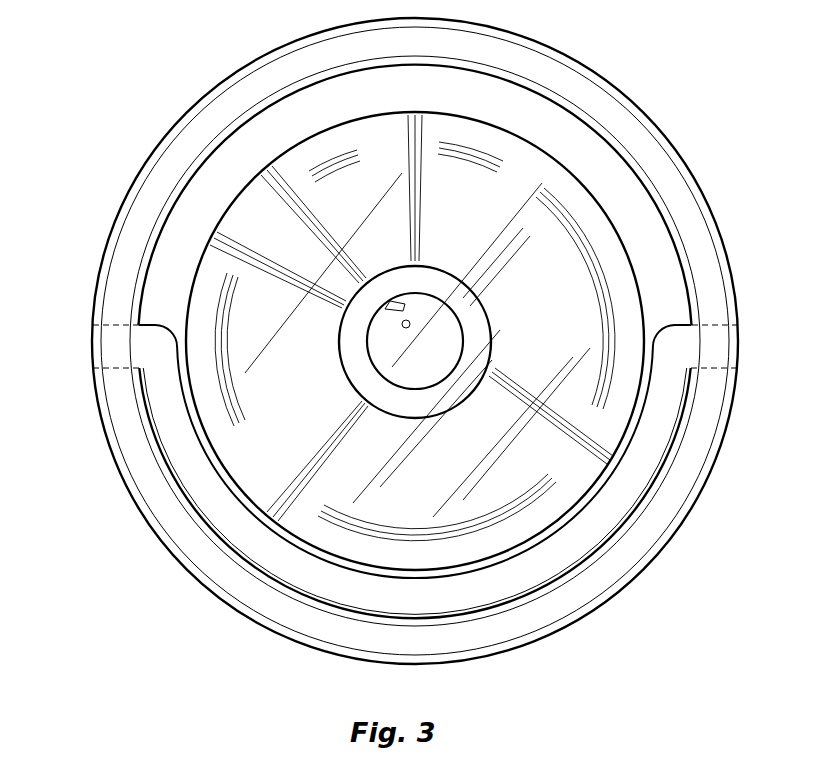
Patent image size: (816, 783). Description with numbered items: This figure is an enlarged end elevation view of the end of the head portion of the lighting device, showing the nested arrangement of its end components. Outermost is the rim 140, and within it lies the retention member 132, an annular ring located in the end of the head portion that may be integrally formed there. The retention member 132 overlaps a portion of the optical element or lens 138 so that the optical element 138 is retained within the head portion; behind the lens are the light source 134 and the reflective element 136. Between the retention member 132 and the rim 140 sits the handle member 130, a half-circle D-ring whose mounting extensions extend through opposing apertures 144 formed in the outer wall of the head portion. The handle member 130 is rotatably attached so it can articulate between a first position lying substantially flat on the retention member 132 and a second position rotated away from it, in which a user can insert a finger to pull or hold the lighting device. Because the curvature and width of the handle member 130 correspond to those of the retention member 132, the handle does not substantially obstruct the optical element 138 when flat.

The handle member 130 is at (620, 495).
The retention member 132 is at (255, 145).
The light source 134 is at (447, 323).
The reflective element 136 is at (266, 463).
The optical element 138 is at (217, 220).
The rim 140 is at (557, 72).
The apertures 144 is at (93, 330).